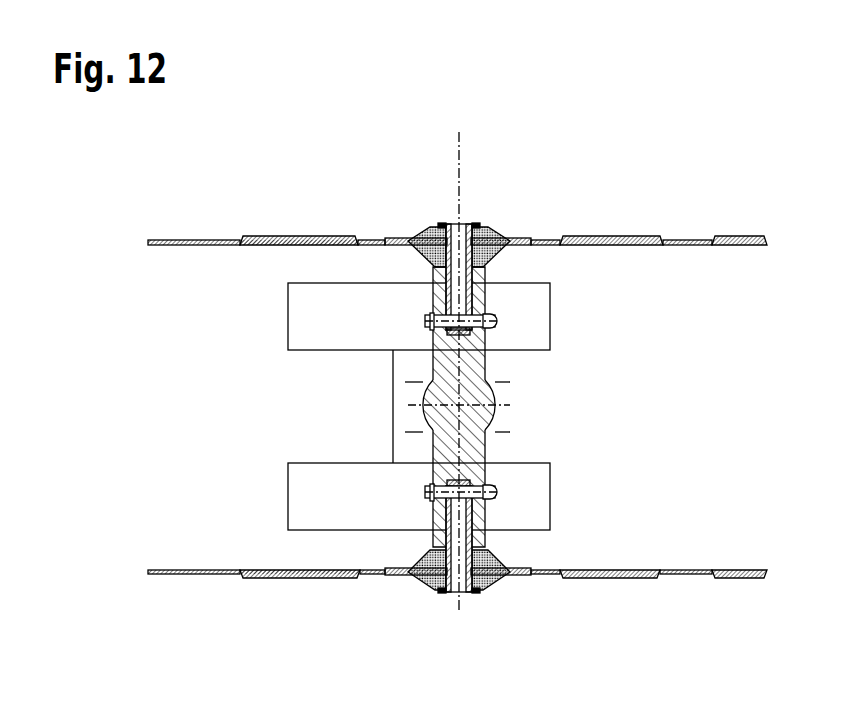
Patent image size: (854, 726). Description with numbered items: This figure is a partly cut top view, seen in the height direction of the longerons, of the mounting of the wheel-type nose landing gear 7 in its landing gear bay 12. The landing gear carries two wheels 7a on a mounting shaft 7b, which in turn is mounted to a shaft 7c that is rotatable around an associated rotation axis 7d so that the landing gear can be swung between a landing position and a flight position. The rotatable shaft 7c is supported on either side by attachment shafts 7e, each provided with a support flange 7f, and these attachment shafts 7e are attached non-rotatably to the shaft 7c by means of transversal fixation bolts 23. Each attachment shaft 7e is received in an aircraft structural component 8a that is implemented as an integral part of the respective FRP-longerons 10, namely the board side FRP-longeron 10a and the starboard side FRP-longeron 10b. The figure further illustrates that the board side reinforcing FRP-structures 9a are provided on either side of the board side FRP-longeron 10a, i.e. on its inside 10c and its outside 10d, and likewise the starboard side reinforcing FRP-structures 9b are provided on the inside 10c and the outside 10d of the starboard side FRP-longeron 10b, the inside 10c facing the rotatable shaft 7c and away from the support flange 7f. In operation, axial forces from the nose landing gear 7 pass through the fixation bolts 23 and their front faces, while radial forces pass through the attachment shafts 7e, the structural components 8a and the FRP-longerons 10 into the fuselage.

The wheel-type nose landing gear 7 is at (213, 380).
The wheels 7a is at (540, 323).
The mounting shaft 7b is at (487, 415).
The shaft 7c is at (476, 366).
The rotation axis 7d is at (457, 140).
The attachment shaft 7e is at (448, 300).
The support flange 7f is at (445, 223).
The aircraft structural component 8a is at (500, 262).
The board side reinforcing FRP-structures 9a is at (412, 228).
The starboard side reinforcing FRP-structures 9b is at (412, 557).
The FRP-longerons 10 is at (645, 582).
The board side FRP-longeron 10a is at (618, 250).
The starboard side FRP-longeron 10b is at (618, 566).
The inner side surface 10c is at (530, 252).
The outside 10d is at (528, 236).
The landing gear bay 12 is at (186, 512).
The fixation bolts 23 is at (447, 334).